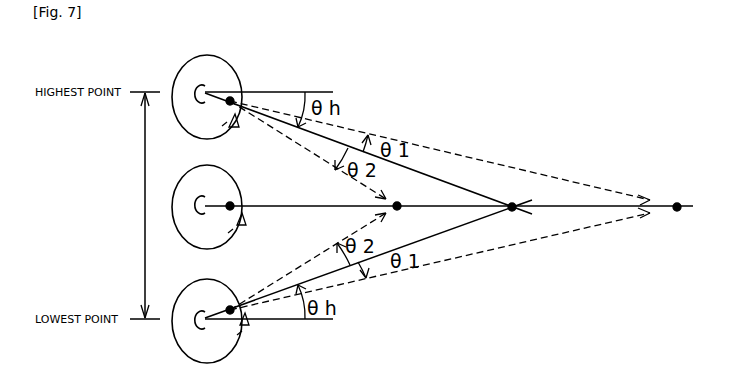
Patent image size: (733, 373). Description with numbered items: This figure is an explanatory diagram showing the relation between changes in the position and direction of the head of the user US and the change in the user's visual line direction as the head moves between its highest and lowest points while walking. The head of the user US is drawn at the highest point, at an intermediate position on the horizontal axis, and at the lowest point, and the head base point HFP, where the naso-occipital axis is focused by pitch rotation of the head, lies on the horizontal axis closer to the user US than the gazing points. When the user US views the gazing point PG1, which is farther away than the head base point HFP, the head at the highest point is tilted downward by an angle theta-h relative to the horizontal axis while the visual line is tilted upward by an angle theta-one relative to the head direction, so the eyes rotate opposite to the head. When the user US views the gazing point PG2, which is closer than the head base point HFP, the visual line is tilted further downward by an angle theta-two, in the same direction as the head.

The user US is at (232, 62).
The gazing point PG1 is at (679, 205).
The gazing point PG2 is at (399, 209).
The head base point HFP is at (511, 219).